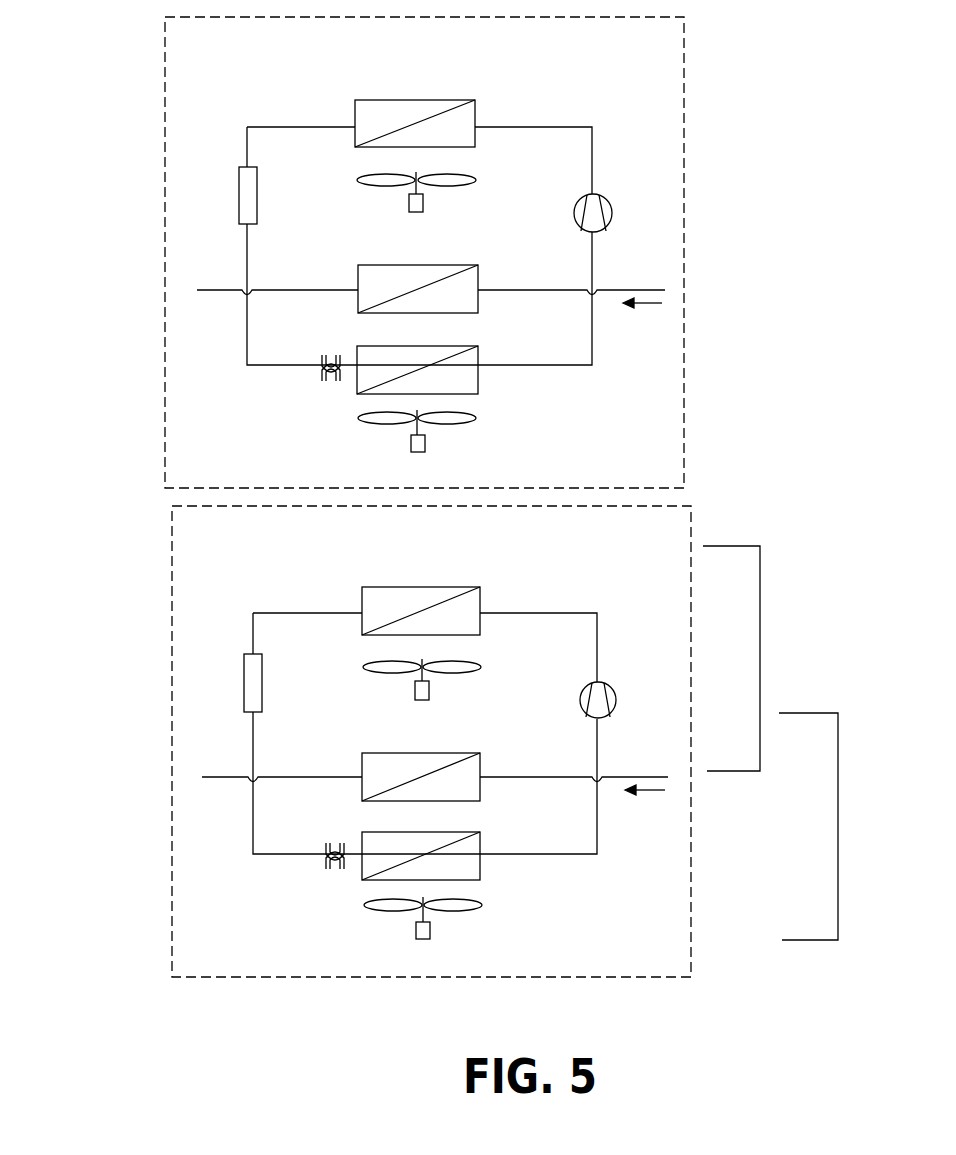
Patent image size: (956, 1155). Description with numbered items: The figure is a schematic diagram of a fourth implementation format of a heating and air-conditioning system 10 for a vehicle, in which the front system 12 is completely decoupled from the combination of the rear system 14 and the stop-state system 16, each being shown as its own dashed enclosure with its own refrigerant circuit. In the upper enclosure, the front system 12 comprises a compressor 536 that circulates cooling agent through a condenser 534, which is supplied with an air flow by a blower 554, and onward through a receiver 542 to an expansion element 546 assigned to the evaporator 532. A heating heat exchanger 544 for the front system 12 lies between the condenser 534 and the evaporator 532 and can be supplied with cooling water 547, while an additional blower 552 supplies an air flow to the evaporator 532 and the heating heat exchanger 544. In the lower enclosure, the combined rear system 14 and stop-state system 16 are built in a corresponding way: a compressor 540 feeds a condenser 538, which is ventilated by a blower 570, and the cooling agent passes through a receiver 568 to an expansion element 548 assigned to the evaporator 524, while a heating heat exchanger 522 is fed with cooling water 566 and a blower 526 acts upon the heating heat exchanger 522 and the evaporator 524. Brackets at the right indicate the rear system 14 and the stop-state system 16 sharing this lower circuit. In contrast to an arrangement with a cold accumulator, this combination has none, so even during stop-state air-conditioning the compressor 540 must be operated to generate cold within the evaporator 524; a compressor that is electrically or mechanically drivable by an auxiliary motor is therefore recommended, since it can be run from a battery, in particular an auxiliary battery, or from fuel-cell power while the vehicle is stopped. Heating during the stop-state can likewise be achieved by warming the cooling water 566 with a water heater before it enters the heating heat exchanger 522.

The heating and air-conditioning system 10 is at (125, 63).
The front system 12 is at (684, 160).
The rear system 14 is at (760, 643).
The stop-state system 16 is at (838, 812).
The heating heat exchanger 522 is at (375, 753).
The evaporator 524 is at (480, 840).
The blower 526 is at (430, 932).
The evaporator 532 is at (478, 376).
The condenser 534 is at (432, 100).
The compressor 536 is at (607, 199).
The condenser 538 is at (446, 587).
The compressor 540 is at (612, 686).
The receiver 542 is at (239, 196).
The heating heat exchanger 544 is at (367, 265).
The expansion element 546 is at (332, 383).
The cooling water 547 is at (647, 304).
The expansion element 548 is at (336, 871).
The blower 552 is at (425, 445).
The blower 554 is at (423, 205).
The cooling water 566 is at (650, 791).
The receiver 568 is at (244, 697).
The blower 570 is at (429, 692).